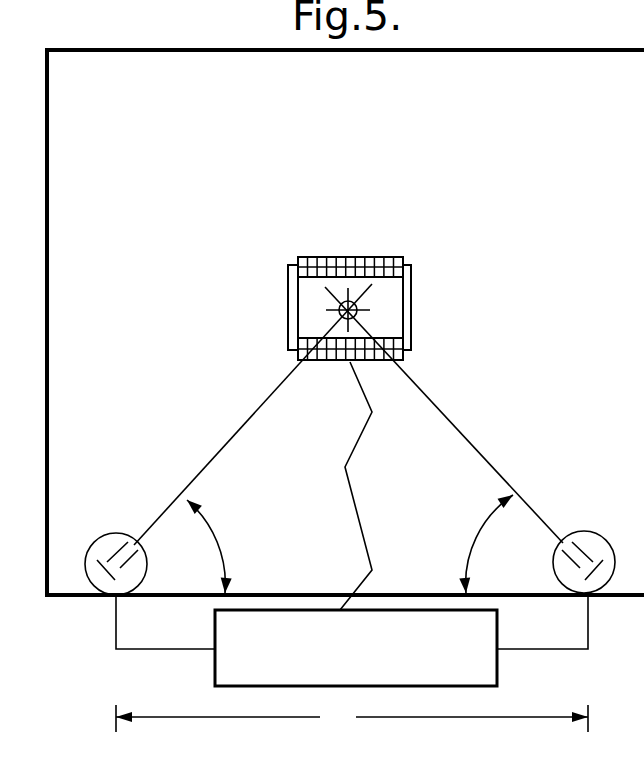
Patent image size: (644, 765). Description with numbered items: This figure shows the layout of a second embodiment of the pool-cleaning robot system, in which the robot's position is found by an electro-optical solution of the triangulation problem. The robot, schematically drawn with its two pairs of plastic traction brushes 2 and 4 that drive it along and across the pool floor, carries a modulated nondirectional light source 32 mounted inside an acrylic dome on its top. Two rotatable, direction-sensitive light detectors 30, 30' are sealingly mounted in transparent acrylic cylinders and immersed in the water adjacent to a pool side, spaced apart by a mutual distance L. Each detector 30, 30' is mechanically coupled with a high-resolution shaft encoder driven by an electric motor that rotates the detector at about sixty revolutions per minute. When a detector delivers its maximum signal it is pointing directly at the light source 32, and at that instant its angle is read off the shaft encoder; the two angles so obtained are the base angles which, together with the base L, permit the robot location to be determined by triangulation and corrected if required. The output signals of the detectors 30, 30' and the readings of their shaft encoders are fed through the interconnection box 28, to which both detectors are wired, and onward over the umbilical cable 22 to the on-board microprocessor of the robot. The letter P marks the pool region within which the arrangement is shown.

The plane / panel surface P is at (45, 178).
The traction brushes 2 is at (377, 263).
The traction brushes 4 is at (325, 262).
The light source 32 is at (356, 311).
The light detector 30 is at (222, 466).
The light detector 30' is at (483, 468).
The umbilical cable 22 is at (363, 528).
The interconnection box 28 is at (498, 640).
The base L is at (352, 719).